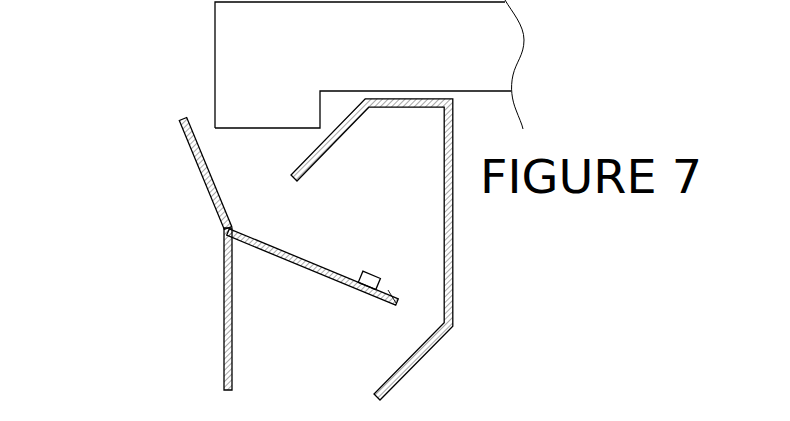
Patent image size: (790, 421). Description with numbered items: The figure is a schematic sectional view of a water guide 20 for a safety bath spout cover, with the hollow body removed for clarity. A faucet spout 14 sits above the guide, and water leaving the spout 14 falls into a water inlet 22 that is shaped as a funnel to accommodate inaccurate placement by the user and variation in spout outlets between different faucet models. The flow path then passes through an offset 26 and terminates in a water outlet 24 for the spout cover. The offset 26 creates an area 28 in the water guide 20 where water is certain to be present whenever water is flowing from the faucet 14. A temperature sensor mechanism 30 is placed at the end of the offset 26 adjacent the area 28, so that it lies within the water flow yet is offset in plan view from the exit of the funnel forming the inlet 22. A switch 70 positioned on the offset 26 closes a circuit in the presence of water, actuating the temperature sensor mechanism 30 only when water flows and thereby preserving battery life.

The spout 14 is at (357, 60).
The water guide 20 is at (136, 232).
The water inlet 22 is at (237, 188).
The water outlet 24 is at (268, 393).
The offset 26 is at (350, 296).
The area 28 is at (412, 308).
The temperature sensor mechanism 30 is at (388, 290).
The switch 70 is at (372, 271).